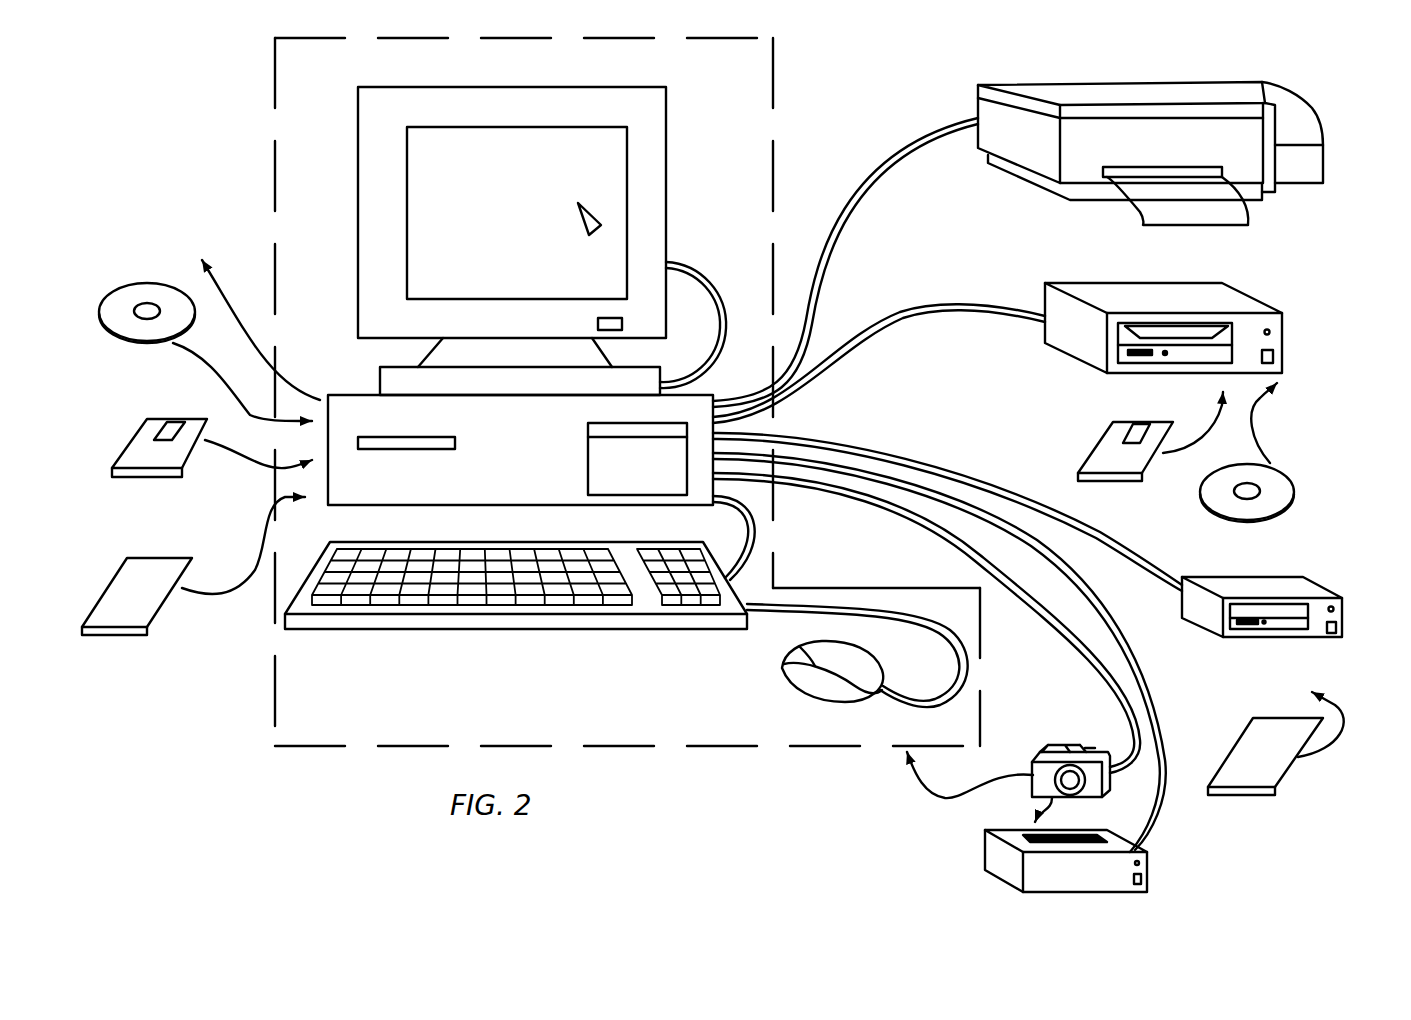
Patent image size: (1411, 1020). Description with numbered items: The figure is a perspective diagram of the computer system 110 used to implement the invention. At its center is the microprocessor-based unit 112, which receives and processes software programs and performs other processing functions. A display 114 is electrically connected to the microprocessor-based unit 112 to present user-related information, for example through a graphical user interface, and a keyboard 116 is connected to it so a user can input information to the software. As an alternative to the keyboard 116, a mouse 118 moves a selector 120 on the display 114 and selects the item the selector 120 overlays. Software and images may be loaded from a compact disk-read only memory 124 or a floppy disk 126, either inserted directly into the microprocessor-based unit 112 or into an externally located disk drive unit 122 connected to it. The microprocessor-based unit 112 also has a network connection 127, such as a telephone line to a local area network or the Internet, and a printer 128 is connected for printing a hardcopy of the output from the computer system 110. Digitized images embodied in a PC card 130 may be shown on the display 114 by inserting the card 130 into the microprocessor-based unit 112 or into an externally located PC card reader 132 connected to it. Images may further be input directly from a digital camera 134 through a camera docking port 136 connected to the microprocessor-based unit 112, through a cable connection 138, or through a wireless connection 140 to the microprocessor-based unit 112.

The computer system 110 is at (787, 63).
The microprocessor-based unit 112 is at (350, 395).
The display 114 is at (485, 88).
The keyboard 116 is at (448, 626).
The mouse 118 is at (793, 676).
The selector 120 is at (601, 219).
The externally located disk drive unit 122 is at (1096, 286).
The compact disk-read only memory (CD-ROM) 124 is at (120, 291).
The floppy disk 126 is at (133, 436).
The network connection 127 is at (235, 314).
The printer 128 is at (1105, 87).
The personal computer card (PC card) 130 is at (117, 572).
The externally located PC card reader 132 is at (1280, 637).
The digital camera 134 is at (1072, 750).
The camera docking port 136 is at (1005, 870).
The cable connection 138 is at (1085, 622).
The wireless connection 140 is at (950, 795).